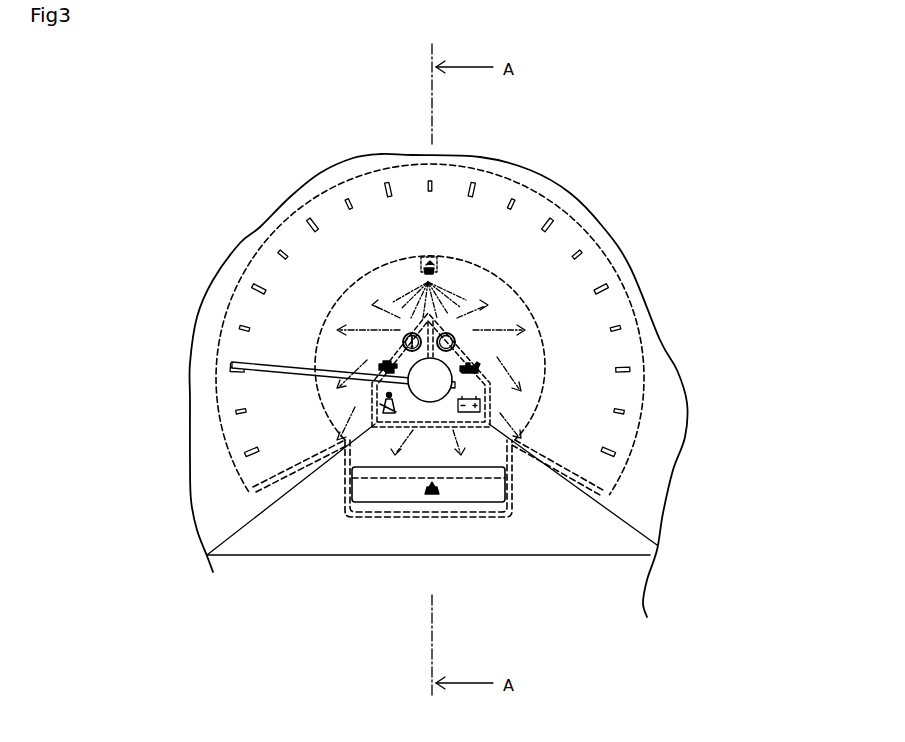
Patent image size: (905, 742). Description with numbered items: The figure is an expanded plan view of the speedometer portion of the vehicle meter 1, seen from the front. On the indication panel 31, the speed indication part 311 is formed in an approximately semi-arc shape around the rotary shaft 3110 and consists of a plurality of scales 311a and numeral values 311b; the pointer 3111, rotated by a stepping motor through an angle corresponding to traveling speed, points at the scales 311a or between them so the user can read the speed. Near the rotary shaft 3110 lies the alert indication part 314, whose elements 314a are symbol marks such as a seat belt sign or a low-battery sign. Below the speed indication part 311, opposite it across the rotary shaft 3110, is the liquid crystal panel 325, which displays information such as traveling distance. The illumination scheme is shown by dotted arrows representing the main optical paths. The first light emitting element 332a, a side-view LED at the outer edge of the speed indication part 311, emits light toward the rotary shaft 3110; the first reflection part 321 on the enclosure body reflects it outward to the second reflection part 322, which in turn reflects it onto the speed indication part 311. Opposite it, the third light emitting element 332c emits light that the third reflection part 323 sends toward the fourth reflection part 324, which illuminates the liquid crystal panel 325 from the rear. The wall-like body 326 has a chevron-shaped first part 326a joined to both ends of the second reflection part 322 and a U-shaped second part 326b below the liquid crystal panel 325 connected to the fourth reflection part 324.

The vehicle meter 1 is at (226, 109).
The indication panel 31 is at (312, 283).
The speed indication part 311 is at (602, 183).
The scales 311a is at (310, 226).
The numeral values 311b is at (258, 311).
The pointer 3111 is at (252, 375).
The rotary shaft 3110 is at (467, 357).
The alert indication part 314 is at (500, 402).
The elements of the alert indication part 314a is at (207, 556).
The first reflection part 321 is at (403, 320).
The second reflection part 322 is at (423, 212).
The third reflection part 323 is at (418, 425).
The fourth reflection part 324 is at (365, 490).
The liquid crystal panel 325 is at (488, 495).
The wall-like body 326 is at (489, 529).
The first part of the wall-like body 326a is at (282, 467).
The second part of the wall-like body 326b is at (407, 518).
The first light emitting element 332a is at (433, 262).
The third light emitting element 332c is at (512, 492).